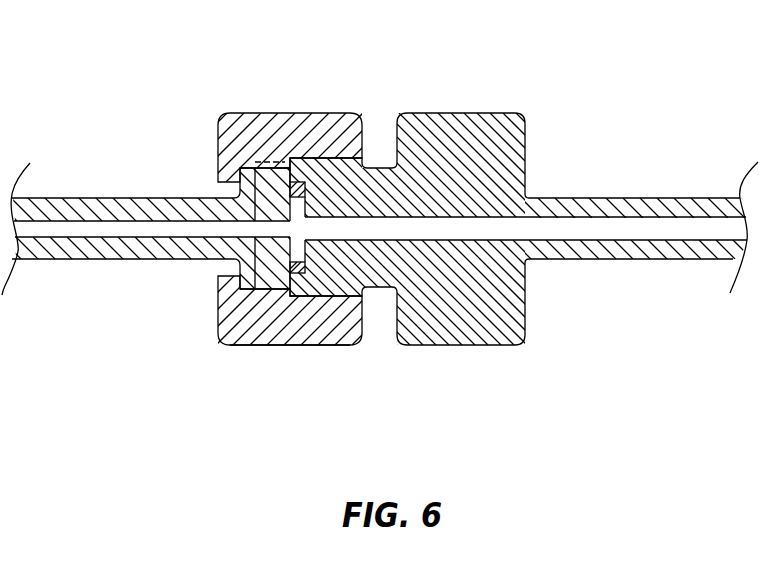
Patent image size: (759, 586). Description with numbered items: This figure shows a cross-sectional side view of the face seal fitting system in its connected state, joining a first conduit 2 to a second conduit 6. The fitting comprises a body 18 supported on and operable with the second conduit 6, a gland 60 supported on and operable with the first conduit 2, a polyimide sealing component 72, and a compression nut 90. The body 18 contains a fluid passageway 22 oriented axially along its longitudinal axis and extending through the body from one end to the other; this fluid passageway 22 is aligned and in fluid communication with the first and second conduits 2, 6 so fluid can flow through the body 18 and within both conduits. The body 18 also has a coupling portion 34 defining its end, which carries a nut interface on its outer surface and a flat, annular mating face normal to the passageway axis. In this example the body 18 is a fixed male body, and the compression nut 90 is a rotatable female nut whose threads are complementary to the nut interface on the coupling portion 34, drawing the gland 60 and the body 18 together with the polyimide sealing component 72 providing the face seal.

The first conduit 2 is at (88, 207).
The second conduit 6 is at (667, 204).
The body 18 is at (450, 347).
The fluid passageway 22 is at (590, 228).
The coupling portion 34 is at (329, 186).
The gland 60 is at (272, 186).
The polyimide sealing component 72 is at (309, 268).
The compression nut 90 is at (265, 347).